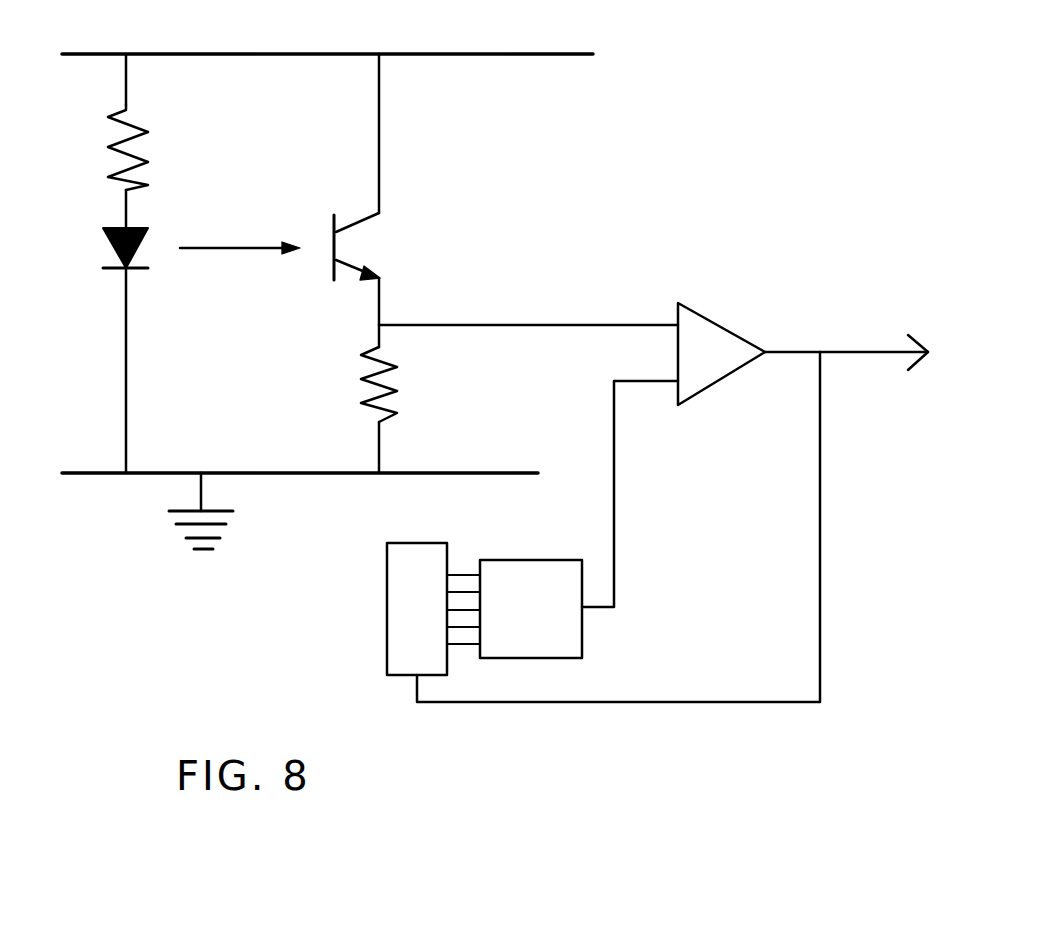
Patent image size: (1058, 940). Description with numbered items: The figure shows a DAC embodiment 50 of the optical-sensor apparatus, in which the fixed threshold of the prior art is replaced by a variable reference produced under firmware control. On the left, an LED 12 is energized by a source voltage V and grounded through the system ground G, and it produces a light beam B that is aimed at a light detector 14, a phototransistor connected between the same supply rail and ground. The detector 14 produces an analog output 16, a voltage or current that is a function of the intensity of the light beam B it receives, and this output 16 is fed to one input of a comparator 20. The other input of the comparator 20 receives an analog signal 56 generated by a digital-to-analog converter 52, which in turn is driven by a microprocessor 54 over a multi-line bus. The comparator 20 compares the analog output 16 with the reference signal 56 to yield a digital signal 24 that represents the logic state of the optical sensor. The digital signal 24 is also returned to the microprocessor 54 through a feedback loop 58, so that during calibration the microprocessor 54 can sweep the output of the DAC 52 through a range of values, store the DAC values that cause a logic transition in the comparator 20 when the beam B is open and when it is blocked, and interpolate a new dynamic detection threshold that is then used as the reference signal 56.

The LED 12 is at (118, 228).
The light detector 14 is at (338, 243).
The analog output 16 is at (553, 325).
The comparator 20 is at (712, 322).
The digital signal 24 is at (858, 352).
The DAC embodiment 50 is at (667, 108).
The digital-to-analog converter 52 is at (508, 560).
The microprocessor 54 is at (387, 628).
The analog signal 56 is at (614, 512).
The feedback loop 58 is at (820, 563).
The source voltage V is at (262, 54).
The light beam B is at (212, 248).
The system ground G is at (215, 505).